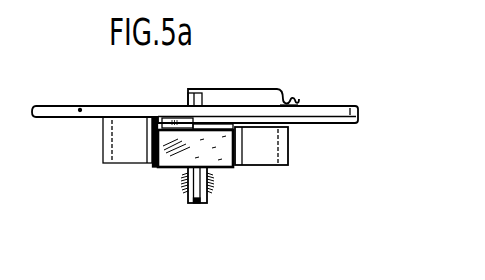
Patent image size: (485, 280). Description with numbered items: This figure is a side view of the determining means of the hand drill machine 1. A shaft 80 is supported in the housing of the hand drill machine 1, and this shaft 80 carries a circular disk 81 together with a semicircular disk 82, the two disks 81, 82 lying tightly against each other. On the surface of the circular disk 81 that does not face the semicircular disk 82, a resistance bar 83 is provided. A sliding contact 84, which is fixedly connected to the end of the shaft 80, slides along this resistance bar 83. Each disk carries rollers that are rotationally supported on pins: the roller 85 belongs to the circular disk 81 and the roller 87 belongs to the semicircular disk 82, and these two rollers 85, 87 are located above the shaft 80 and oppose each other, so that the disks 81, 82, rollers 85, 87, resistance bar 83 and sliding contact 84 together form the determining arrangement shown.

The semicircular disk 82 is at (340, 122).
The circular disk 81 is at (80, 110).
The sliding contact 84 is at (238, 88).
The resistance bar 83 is at (299, 103).
The roller 85 is at (114, 143).
The roller 87 is at (276, 150).
The shaft 80 is at (197, 200).
The hand drill machine 1 is at (209, 192).